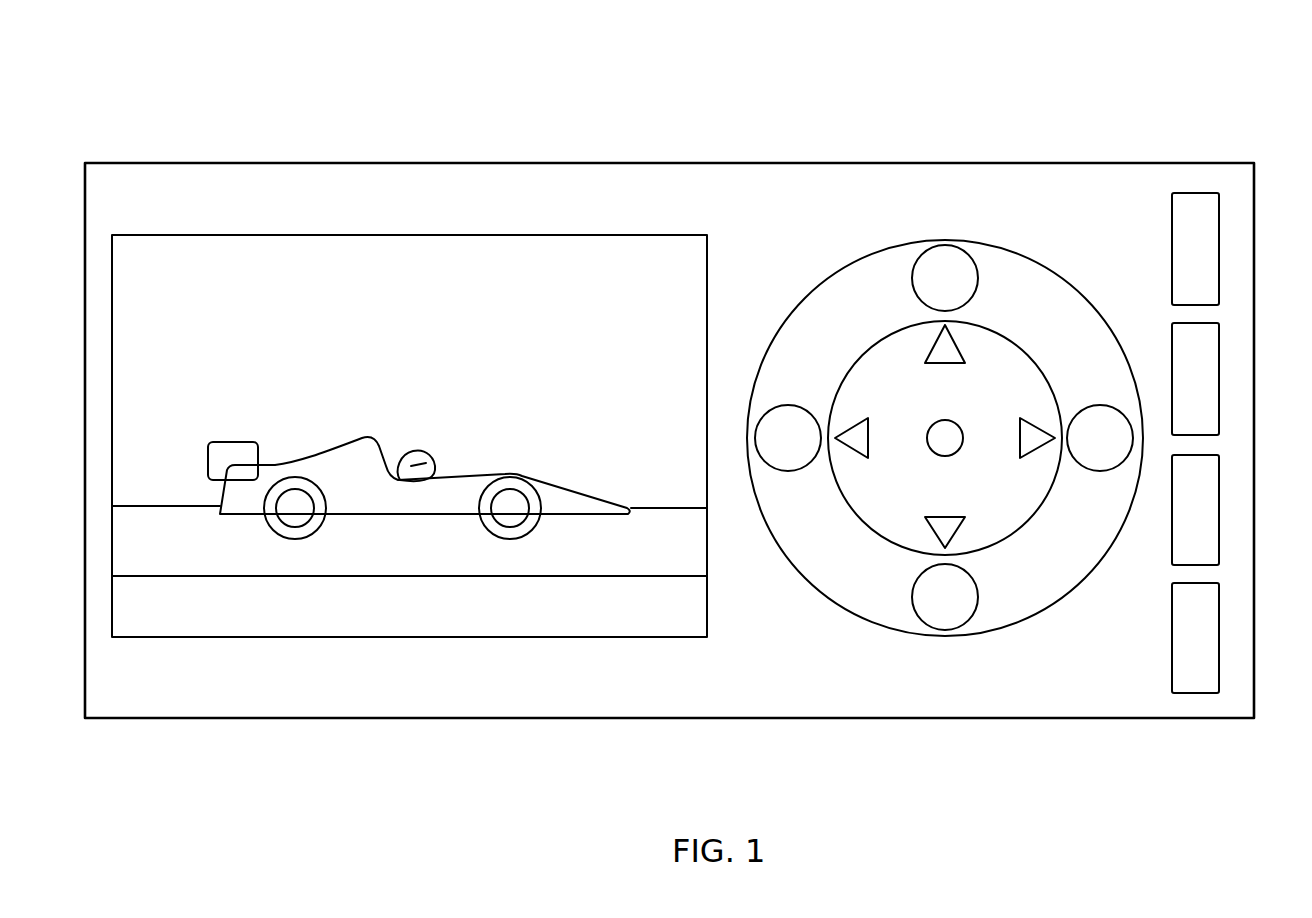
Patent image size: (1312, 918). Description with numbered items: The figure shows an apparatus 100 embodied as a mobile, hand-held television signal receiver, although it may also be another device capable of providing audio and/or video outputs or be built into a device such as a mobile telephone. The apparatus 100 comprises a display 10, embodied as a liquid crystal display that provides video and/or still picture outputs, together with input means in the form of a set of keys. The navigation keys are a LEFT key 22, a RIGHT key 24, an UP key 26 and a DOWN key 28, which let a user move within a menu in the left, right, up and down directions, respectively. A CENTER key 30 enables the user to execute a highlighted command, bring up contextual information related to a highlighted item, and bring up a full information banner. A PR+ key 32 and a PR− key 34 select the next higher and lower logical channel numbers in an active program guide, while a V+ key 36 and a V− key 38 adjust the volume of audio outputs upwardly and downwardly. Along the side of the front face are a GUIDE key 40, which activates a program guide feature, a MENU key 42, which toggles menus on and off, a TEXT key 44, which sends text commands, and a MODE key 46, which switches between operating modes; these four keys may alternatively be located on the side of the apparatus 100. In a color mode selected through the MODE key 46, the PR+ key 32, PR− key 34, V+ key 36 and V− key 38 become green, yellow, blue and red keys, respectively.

The apparatus 100 is at (1207, 102).
The display 10 is at (213, 235).
The LEFT key 22 is at (858, 452).
The RIGHT key 24 is at (1037, 423).
The UP key 26 is at (927, 350).
The DOWN key 28 is at (957, 532).
The CENTER key 30 is at (963, 438).
The PR+ key 32 is at (913, 265).
The PR− key 34 is at (973, 612).
The V+ key 36 is at (1100, 471).
The V− key 38 is at (783, 405).
The GUIDE key 40 is at (1219, 253).
The MENU key 42 is at (1219, 377).
The TEXT key 44 is at (1219, 508).
The MODE key 46 is at (1219, 628).